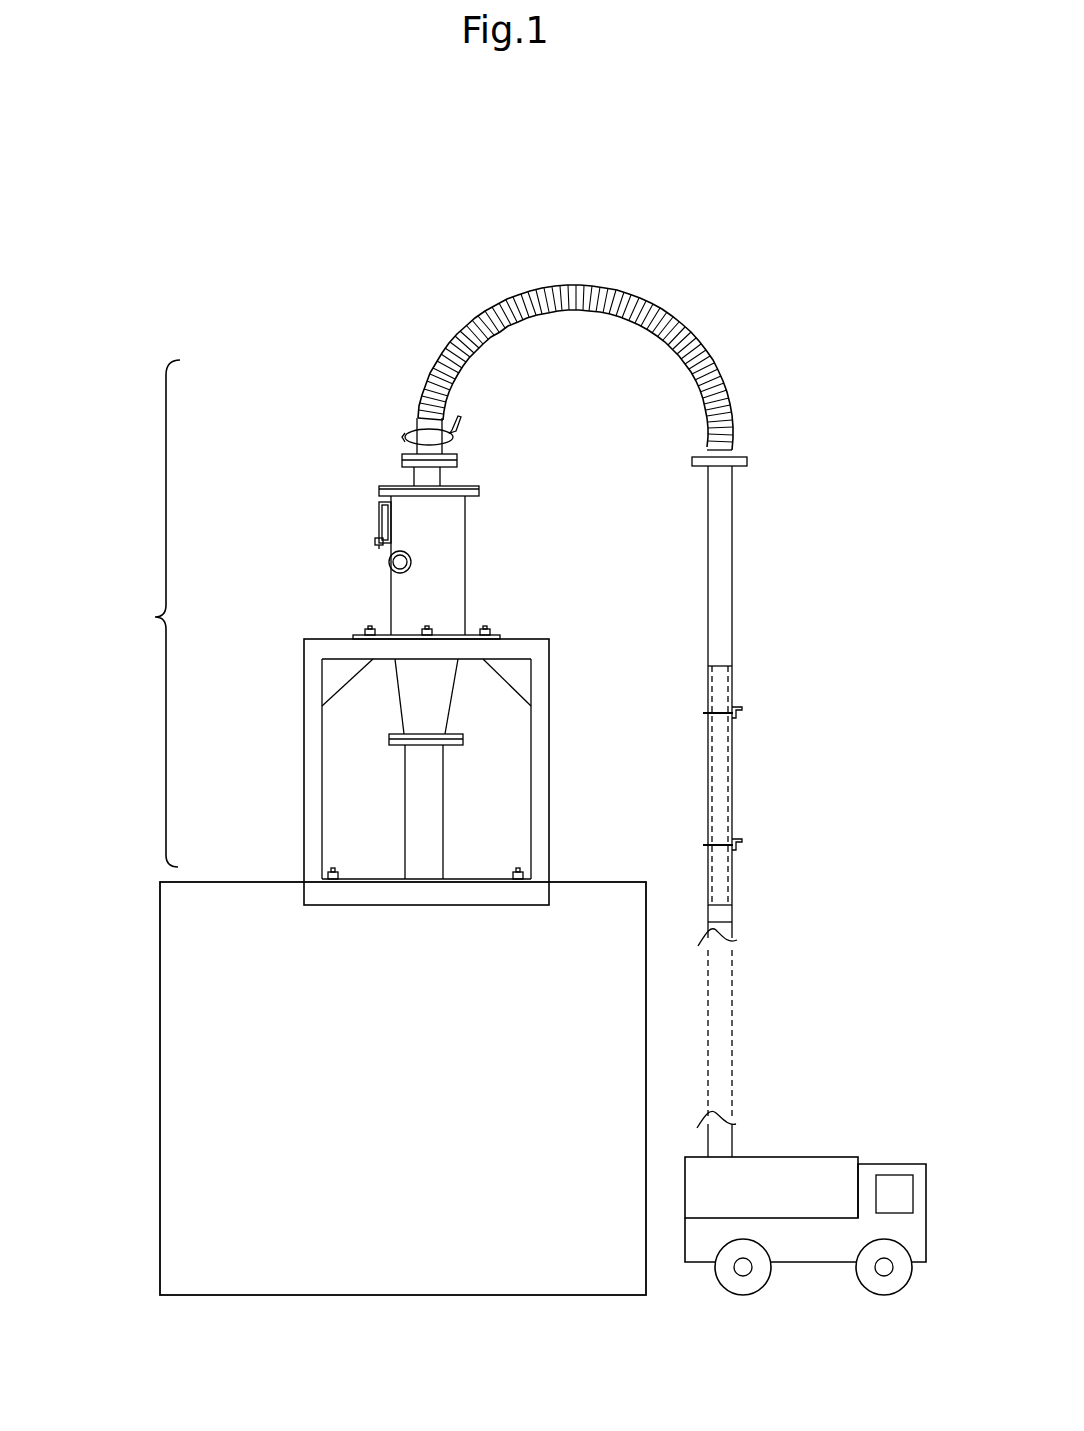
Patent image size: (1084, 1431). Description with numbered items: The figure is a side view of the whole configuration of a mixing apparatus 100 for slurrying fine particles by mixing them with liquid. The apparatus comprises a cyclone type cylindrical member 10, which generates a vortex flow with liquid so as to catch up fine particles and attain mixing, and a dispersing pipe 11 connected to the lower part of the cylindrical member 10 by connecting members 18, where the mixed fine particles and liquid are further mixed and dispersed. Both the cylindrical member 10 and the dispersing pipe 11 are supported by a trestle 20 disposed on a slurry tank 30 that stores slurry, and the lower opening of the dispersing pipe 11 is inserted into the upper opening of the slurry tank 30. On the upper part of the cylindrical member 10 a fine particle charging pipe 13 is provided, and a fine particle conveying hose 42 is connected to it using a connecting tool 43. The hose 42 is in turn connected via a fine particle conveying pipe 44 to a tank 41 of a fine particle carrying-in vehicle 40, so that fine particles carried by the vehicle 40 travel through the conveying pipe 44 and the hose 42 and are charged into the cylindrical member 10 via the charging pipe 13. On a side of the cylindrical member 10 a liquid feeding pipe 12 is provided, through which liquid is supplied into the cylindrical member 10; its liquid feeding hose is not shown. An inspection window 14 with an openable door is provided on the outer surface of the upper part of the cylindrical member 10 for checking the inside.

The mixing apparatus 100 is at (129, 613).
The cyclone type cylindrical member 10 is at (453, 552).
The dispersing pipe 11 is at (425, 822).
The liquid feeding pipe 12 is at (395, 565).
The fine particle charging pipe 13 is at (428, 482).
The inspection window 14 is at (378, 512).
The connecting members 18 is at (463, 736).
The trestle 20 is at (313, 775).
The slurry tank 30 is at (188, 1053).
The fine particle carrying-in vehicle 40 is at (833, 1300).
The tank 41 is at (796, 1177).
The fine particle conveying hose 42 is at (453, 335).
The connecting tool 43 is at (405, 437).
The fine particle conveying pipe 44 is at (727, 517).